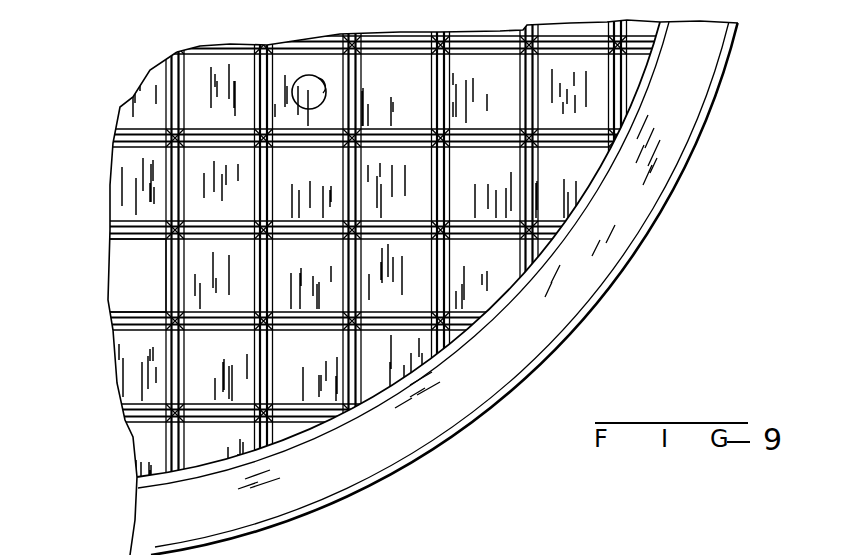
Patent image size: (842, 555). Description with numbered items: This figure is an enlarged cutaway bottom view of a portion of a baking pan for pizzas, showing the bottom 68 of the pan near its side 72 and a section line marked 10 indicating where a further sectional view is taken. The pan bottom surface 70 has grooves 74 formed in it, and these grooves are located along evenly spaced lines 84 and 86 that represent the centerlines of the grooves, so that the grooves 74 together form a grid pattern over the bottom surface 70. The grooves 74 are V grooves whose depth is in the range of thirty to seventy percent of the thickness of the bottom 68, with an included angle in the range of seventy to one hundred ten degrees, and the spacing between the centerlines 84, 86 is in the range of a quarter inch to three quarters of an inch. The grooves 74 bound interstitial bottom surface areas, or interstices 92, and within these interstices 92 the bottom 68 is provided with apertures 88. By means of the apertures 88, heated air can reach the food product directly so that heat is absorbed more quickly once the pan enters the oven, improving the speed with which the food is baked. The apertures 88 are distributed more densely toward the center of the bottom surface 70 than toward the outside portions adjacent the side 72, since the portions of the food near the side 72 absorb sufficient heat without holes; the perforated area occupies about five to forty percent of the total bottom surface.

The bottom 68 is at (104, 98).
The bottom surface 70 is at (125, 282).
The side 72 is at (710, 52).
The grooves 74 is at (400, 133).
The lines 84 is at (495, 138).
The lines 86 is at (523, 72).
The apertures 88 is at (313, 80).
The interstices 92 is at (403, 195).
The section line 10- 10 is at (308, 60).